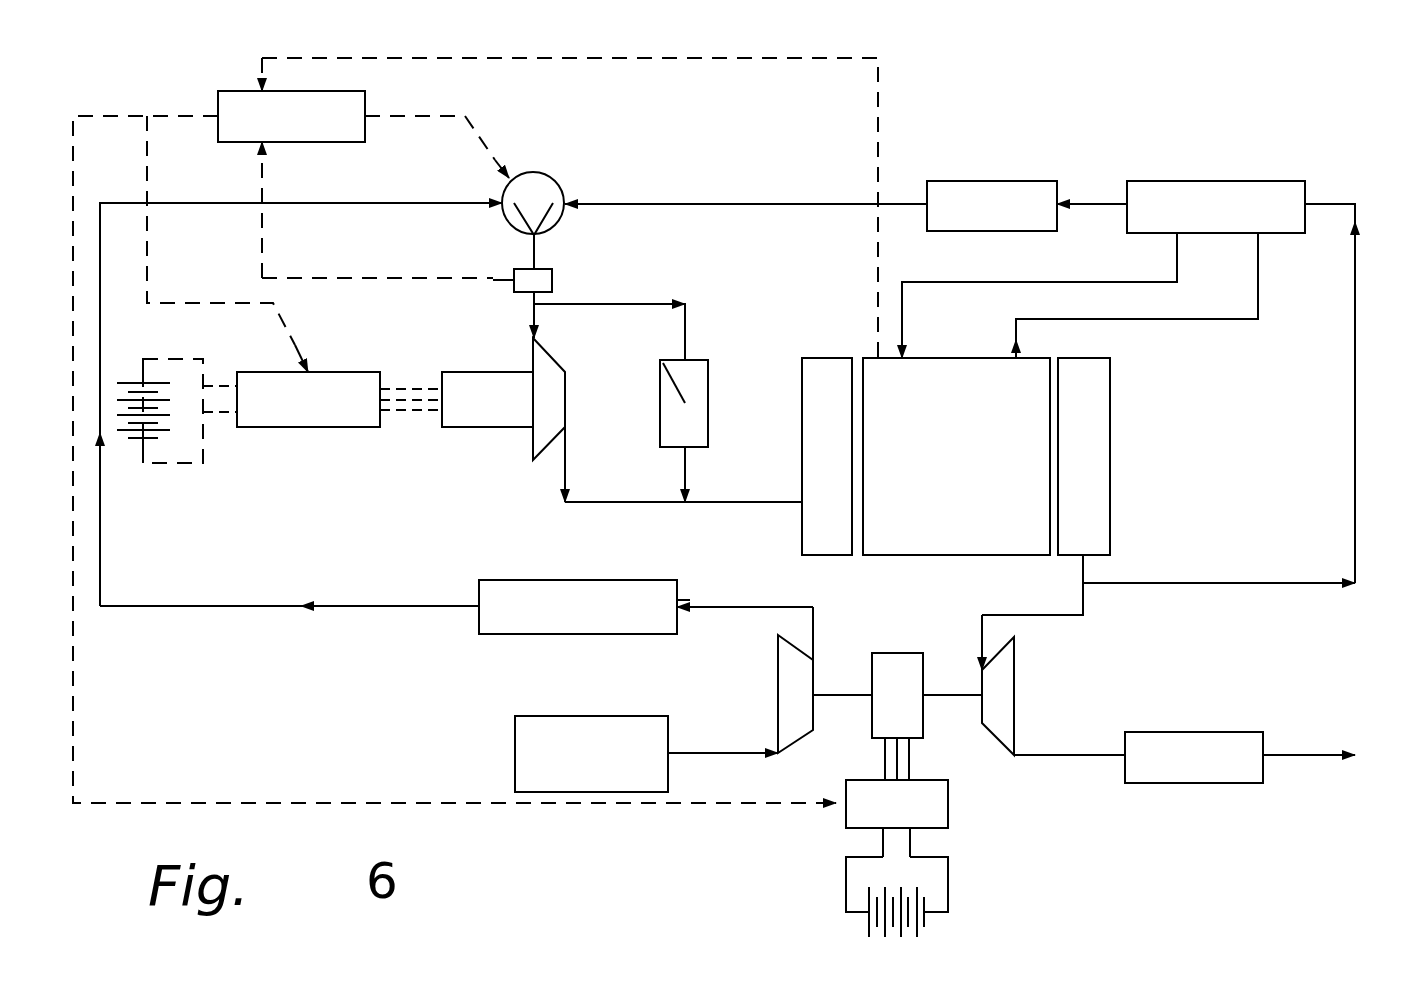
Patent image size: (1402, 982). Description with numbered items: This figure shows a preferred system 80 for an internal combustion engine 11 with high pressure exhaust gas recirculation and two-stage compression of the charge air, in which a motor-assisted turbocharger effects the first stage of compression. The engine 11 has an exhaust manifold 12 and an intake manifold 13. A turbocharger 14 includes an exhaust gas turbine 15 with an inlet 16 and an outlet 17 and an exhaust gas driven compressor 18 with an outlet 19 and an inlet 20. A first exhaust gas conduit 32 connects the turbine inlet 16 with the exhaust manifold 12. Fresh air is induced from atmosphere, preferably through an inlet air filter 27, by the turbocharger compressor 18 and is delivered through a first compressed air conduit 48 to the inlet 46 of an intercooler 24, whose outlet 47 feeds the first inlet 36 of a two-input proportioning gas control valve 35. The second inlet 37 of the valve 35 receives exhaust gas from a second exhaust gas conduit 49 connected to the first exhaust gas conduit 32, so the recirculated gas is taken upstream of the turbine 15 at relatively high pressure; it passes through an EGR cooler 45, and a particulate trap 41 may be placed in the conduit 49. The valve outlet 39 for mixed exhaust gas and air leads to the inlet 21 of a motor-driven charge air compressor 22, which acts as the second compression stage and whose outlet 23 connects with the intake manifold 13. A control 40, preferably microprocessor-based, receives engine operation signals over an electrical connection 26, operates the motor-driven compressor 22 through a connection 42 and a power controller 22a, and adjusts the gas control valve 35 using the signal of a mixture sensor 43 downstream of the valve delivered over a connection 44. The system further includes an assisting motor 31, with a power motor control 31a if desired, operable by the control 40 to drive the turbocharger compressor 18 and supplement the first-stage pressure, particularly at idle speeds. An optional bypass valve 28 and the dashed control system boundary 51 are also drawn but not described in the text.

The internal combustion engine 11 is at (965, 365).
The exhaust manifold 12 is at (1110, 443).
The intake manifold 13 is at (802, 445).
The turbocharger 14 is at (1033, 660).
The exhaust gas turbine 15 is at (1014, 690).
The turbine inlet 16 is at (982, 670).
The turbine outlet 17 is at (1014, 758).
The exhaust gas driven compressor 18 is at (778, 700).
The compressor outlet 19 is at (813, 665).
The compressor inlet 20 is at (778, 753).
The inlet of motor-driven charge air compressor 21 is at (533, 340).
The motor-driven charge air compressor 22 is at (533, 440).
The power controller 22a is at (300, 427).
The outlet of motor-driven charge air compressor 23 is at (565, 427).
The intercooler 24 is at (570, 634).
The electrical connection 26 is at (880, 65).
The inlet air filter 27 is at (515, 745).
The optional bypass valve 28 is at (708, 395).
The assisting motor 31 is at (897, 653).
The power motor control 31a is at (948, 808).
The first exhaust gas conduit 32 is at (1050, 615).
The two-input proportioning gas control valve 35 is at (551, 183).
The first inlet of gas control valve 36 is at (500, 210).
The second inlet of gas control valve 37 is at (570, 215).
The outlet of gas control valve 39 is at (540, 240).
The control 40 is at (218, 103).
The particulate trap 41 is at (1057, 181).
The connection 42 is at (187, 303).
The mixture sensor 43 is at (552, 280).
The connection 44 is at (312, 278).
The EGR cooler 45 is at (1240, 181).
The intercooler inlet 46 is at (680, 600).
The intercooler outlet 47 is at (479, 588).
The first compressed air conduit 48 is at (760, 607).
The second exhaust gas conduit 49 is at (1355, 475).
The control system 51 is at (73, 707).
The system 80 is at (1323, 152).